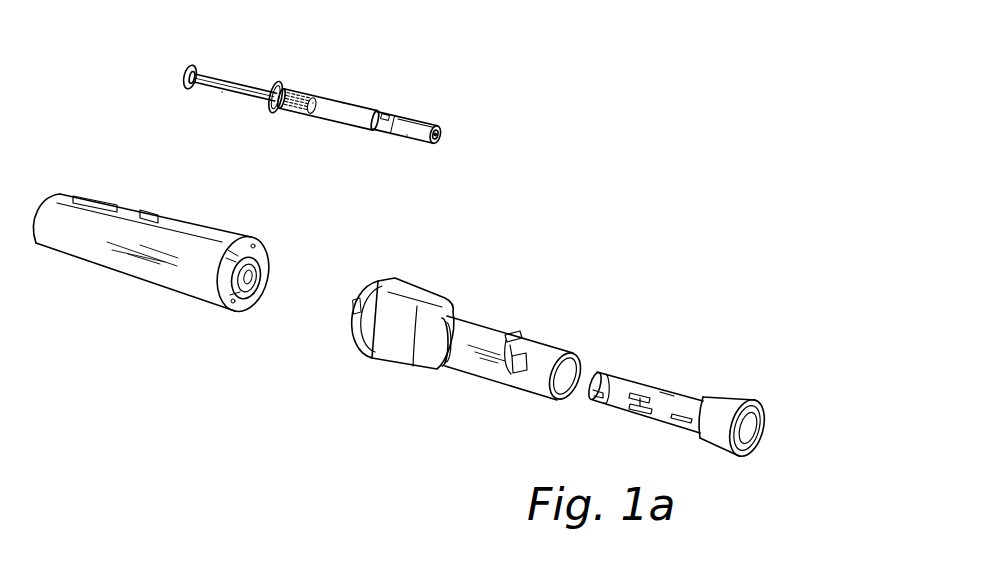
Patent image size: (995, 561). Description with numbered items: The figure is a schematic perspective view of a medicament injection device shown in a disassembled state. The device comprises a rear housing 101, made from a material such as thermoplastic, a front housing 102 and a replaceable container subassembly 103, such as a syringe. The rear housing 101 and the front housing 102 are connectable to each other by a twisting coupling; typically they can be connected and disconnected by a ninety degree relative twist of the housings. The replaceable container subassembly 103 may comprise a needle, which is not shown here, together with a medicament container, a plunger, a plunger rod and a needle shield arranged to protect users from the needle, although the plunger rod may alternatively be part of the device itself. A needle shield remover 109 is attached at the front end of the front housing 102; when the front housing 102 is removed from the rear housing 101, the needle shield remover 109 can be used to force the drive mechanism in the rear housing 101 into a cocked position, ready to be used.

The rear housing 101 is at (153, 283).
The front housing 102 is at (405, 353).
The replaceable container subassembly 103 is at (312, 124).
The needle shield remover 109 is at (652, 392).